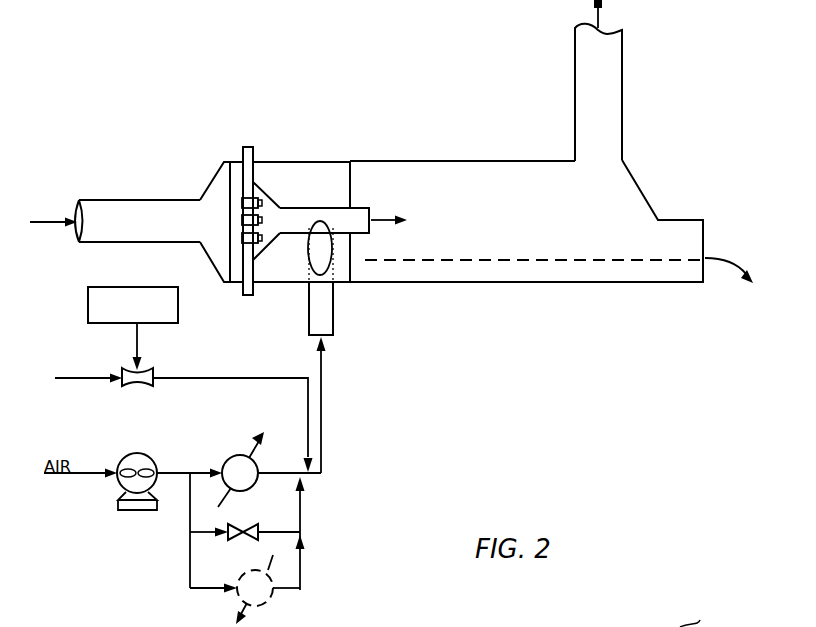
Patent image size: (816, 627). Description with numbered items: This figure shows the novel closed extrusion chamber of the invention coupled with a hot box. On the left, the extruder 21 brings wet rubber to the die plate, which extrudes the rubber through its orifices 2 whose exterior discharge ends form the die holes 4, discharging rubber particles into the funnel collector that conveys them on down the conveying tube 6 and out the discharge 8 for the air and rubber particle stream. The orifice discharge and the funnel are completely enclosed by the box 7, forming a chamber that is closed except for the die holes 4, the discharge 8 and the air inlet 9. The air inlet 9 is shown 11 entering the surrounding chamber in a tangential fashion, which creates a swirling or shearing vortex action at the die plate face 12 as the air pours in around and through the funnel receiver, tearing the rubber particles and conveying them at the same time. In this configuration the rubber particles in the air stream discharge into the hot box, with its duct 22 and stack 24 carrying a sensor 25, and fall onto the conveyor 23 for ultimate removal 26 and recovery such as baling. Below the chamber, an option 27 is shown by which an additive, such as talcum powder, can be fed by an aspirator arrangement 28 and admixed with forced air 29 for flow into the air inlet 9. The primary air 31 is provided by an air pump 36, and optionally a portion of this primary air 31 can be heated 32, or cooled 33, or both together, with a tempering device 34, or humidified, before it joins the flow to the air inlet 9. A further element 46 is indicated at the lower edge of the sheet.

The orifices 2 is at (242, 238).
The die holes 4 is at (262, 200).
The conveying tube 6 is at (300, 207).
The box 7 is at (280, 162).
The discharge 8 is at (380, 216).
The air inlet 9 is at (325, 360).
The air inlet shown 11 is at (328, 257).
The die plate face 12 is at (258, 237).
The extruder 21 is at (130, 232).
The duct 22 is at (420, 161).
The conveyor 23 is at (455, 259).
The stack 24 is at (622, 42).
The stack sensor 25 is at (600, 22).
The removal 26 is at (739, 280).
The option 27 is at (147, 315).
The aspirator arrangement 28 is at (143, 387).
The forced air 29 is at (55, 378).
The primary air 31 is at (174, 472).
The heated 32 is at (268, 458).
The cooled 33 is at (272, 596).
The tempering device 34 is at (250, 524).
The air pump 36 is at (140, 468).
The element 46 is at (688, 626).